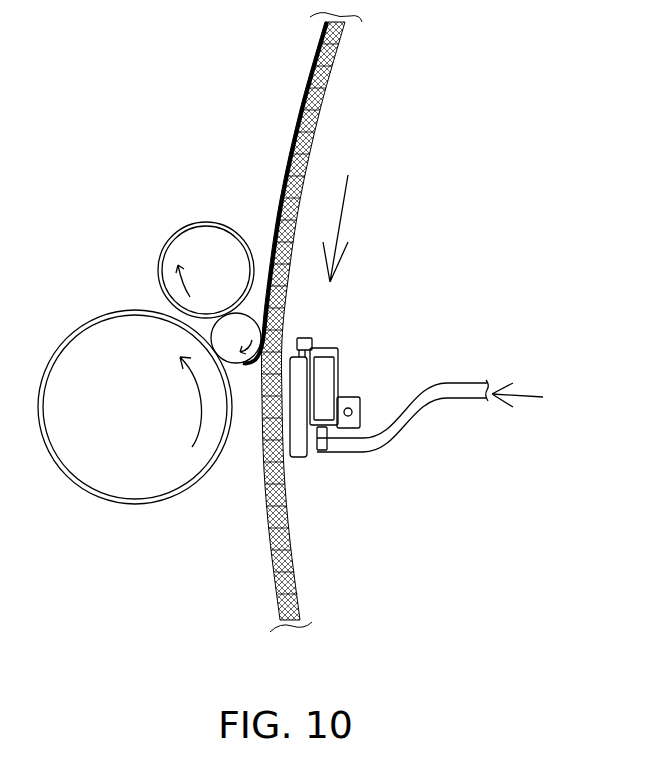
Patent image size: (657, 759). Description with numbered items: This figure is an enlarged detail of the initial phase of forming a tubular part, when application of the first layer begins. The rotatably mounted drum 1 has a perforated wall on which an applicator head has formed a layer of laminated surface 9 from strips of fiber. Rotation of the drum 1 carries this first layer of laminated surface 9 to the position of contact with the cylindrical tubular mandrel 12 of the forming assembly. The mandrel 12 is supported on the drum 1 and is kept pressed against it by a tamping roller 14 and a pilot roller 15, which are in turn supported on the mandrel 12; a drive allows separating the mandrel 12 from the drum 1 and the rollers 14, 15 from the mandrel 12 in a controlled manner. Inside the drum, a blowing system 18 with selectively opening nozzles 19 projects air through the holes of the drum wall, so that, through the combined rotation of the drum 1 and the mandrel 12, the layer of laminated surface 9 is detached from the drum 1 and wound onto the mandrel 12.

The drum 1 is at (268, 541).
The laminated surface 9 is at (270, 220).
The cylindrical tubular mandrel 12 is at (235, 338).
The tamping roller 14 is at (207, 270).
The pilot roller 15 is at (135, 407).
The blowing system 18 is at (367, 372).
The nozzles 19 is at (312, 340).